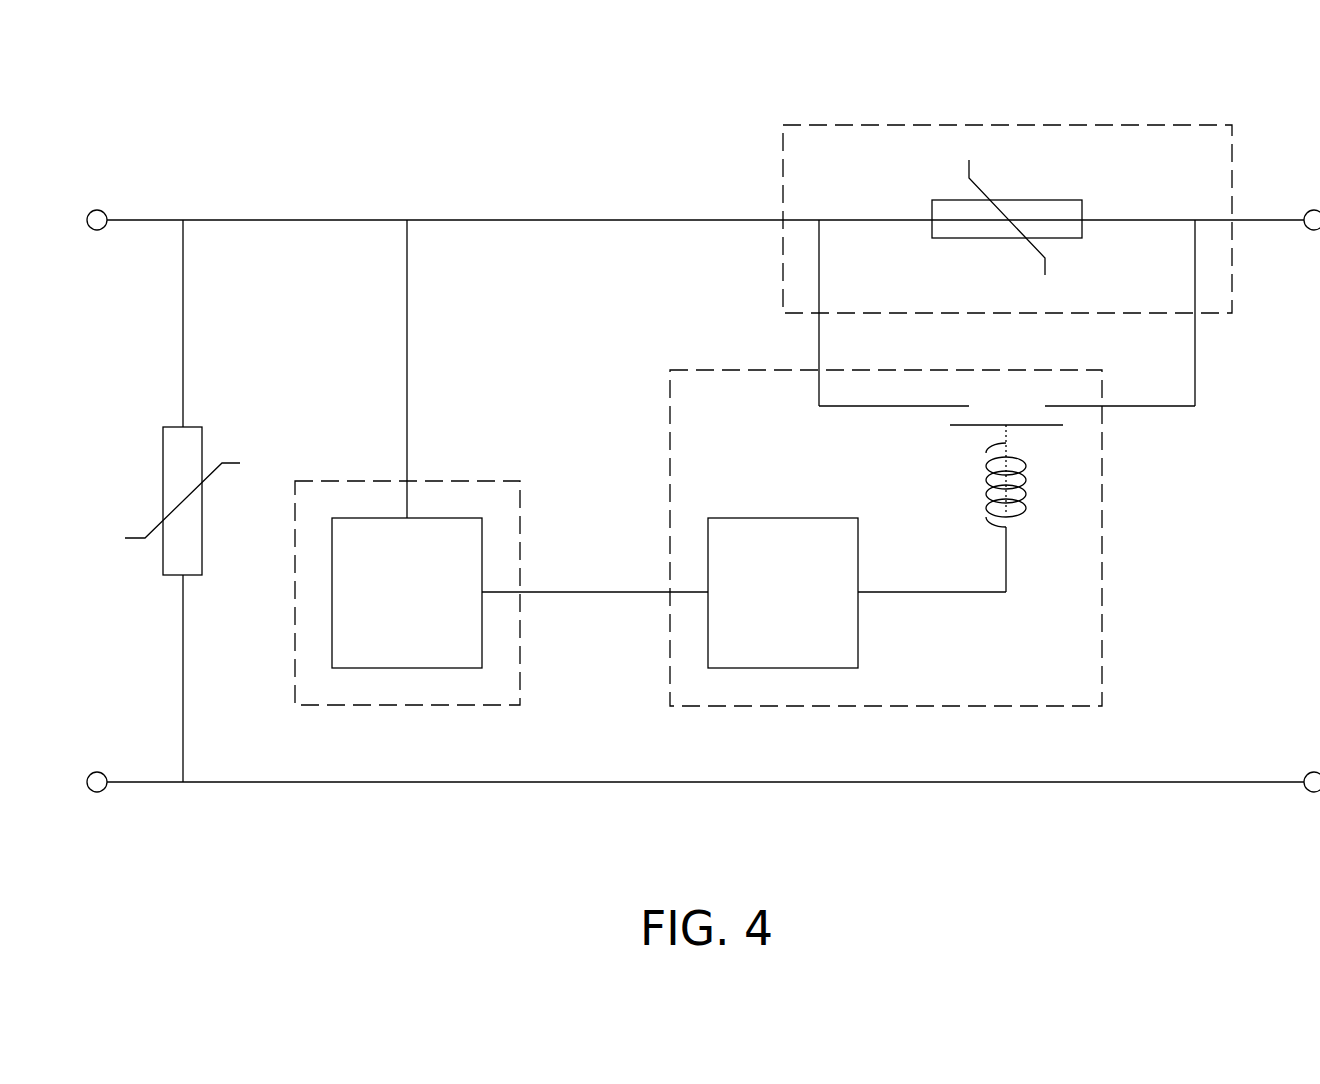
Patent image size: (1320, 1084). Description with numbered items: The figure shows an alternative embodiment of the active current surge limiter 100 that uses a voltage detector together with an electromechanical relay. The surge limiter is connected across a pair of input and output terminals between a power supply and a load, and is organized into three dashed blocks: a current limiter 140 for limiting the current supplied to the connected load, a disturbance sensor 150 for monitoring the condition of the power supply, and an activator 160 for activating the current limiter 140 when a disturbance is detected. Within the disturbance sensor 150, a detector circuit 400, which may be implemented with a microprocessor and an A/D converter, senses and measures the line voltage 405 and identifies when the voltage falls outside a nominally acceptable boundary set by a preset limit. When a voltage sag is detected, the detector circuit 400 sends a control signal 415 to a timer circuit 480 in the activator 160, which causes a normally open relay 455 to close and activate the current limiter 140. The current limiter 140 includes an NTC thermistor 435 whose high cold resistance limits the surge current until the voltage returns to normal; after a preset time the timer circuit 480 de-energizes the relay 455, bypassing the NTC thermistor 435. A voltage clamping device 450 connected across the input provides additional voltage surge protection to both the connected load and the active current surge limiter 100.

The active current surge limiter 100 is at (443, 122).
The current limiter 140 is at (1007, 219).
The disturbance sensor 150 is at (407, 593).
The activator 160 is at (886, 538).
The detector circuit 400 is at (428, 607).
The line voltage 405 is at (407, 370).
The control signal 415 is at (557, 592).
The NTC thermistor 435 is at (1043, 200).
The voltage clamping device 450 is at (202, 445).
The relay 455 is at (960, 446).
The timer circuit 480 is at (803, 607).